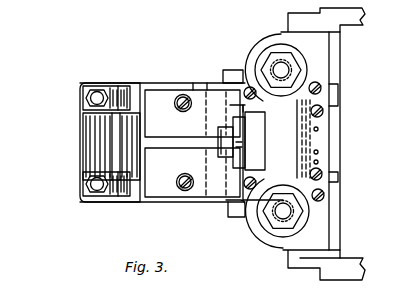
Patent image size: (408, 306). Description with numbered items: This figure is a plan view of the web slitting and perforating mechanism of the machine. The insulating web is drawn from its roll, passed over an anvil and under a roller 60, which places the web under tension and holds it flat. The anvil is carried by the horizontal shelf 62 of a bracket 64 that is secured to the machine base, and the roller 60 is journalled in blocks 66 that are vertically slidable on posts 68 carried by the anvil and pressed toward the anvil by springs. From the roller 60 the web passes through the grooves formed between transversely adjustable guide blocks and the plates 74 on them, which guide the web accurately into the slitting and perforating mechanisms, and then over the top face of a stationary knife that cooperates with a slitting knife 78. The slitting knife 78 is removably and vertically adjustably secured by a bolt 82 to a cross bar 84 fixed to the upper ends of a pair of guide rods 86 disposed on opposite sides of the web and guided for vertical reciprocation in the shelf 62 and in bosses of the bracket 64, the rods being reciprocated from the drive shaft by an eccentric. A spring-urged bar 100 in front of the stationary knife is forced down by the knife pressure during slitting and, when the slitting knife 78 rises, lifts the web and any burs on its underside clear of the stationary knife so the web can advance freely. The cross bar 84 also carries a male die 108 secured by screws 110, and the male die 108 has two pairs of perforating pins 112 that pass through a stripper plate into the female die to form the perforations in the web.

The roller 60 is at (97, 140).
The horizontal shelf 62 is at (138, 201).
The bracket 64 is at (296, 259).
The blocks 66 is at (119, 111).
The posts 68 is at (84, 99).
The plates 74 is at (163, 93).
The slitting knife 78 is at (243, 125).
The bolt 82 is at (218, 140).
The cross bar 84 is at (286, 142).
The guide rods 86 is at (279, 69).
The bar 100 is at (196, 202).
The male die 108 is at (307, 141).
The screws 110 is at (341, 100).
The perforating pins 112 is at (319, 163).